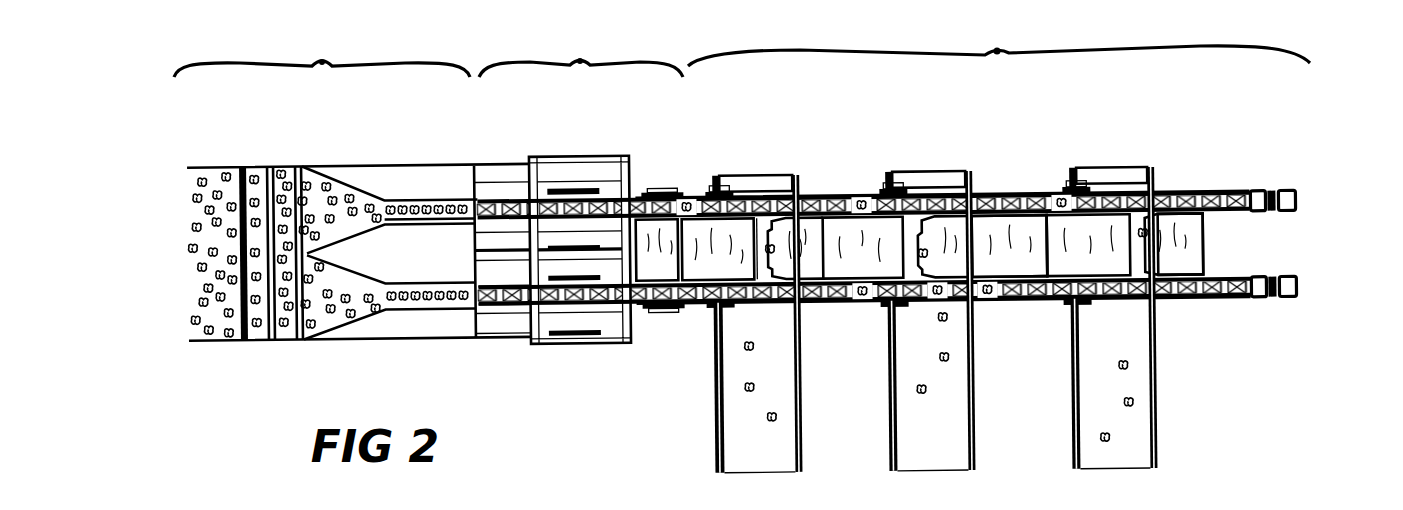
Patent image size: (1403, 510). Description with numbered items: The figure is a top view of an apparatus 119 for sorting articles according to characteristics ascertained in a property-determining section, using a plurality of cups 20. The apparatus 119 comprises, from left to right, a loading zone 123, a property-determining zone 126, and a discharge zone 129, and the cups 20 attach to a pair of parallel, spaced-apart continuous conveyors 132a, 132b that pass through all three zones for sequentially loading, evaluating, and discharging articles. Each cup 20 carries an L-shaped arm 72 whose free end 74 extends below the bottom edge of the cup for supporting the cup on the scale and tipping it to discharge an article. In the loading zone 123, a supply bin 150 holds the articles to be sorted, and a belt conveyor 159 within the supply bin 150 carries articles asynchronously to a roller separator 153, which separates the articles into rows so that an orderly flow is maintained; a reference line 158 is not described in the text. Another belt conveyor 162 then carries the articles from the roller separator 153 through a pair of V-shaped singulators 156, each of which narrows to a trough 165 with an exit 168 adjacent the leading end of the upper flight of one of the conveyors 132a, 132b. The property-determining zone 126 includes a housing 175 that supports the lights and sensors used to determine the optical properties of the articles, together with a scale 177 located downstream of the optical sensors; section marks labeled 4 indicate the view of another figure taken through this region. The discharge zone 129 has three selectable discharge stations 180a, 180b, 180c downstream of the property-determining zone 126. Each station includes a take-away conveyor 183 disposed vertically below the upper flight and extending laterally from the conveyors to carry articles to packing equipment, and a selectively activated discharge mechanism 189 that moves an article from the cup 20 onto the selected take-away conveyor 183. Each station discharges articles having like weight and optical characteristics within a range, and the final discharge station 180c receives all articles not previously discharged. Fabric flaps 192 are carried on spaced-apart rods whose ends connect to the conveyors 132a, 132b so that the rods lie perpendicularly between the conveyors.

The apparatus 119 is at (712, 36).
The loading zone 123 is at (322, 54).
The property-determining zone 126 is at (581, 54).
The discharge zone 129 is at (999, 43).
The supply bin 150 is at (185, 182).
The roller separator 153 is at (287, 167).
The upper funnel 158 is at (345, 183).
The L-shaped arm 72 is at (431, 151).
The trough 165 is at (444, 196).
The exit 168 is at (472, 285).
The belt conveyor 162 is at (398, 330).
The V-shaped singulator 156 is at (462, 313).
The belt conveyor 159 is at (188, 320).
The section line 4- 4 is at (525, 158).
The housing 175 is at (582, 158).
The scale 177 is at (655, 194).
The cup 20 is at (812, 200).
The free end 74 is at (676, 151).
The discharge station 180a is at (760, 168).
The discharge station 180b is at (937, 140).
The final discharge station 180c is at (1136, 134).
The discharge mechanism 189 is at (900, 191).
The fabric flap 192 is at (1005, 225).
The continuous conveyor 132a is at (1298, 204).
The continuous conveyor 132b is at (1298, 290).
The take-away conveyor 183 is at (720, 447).